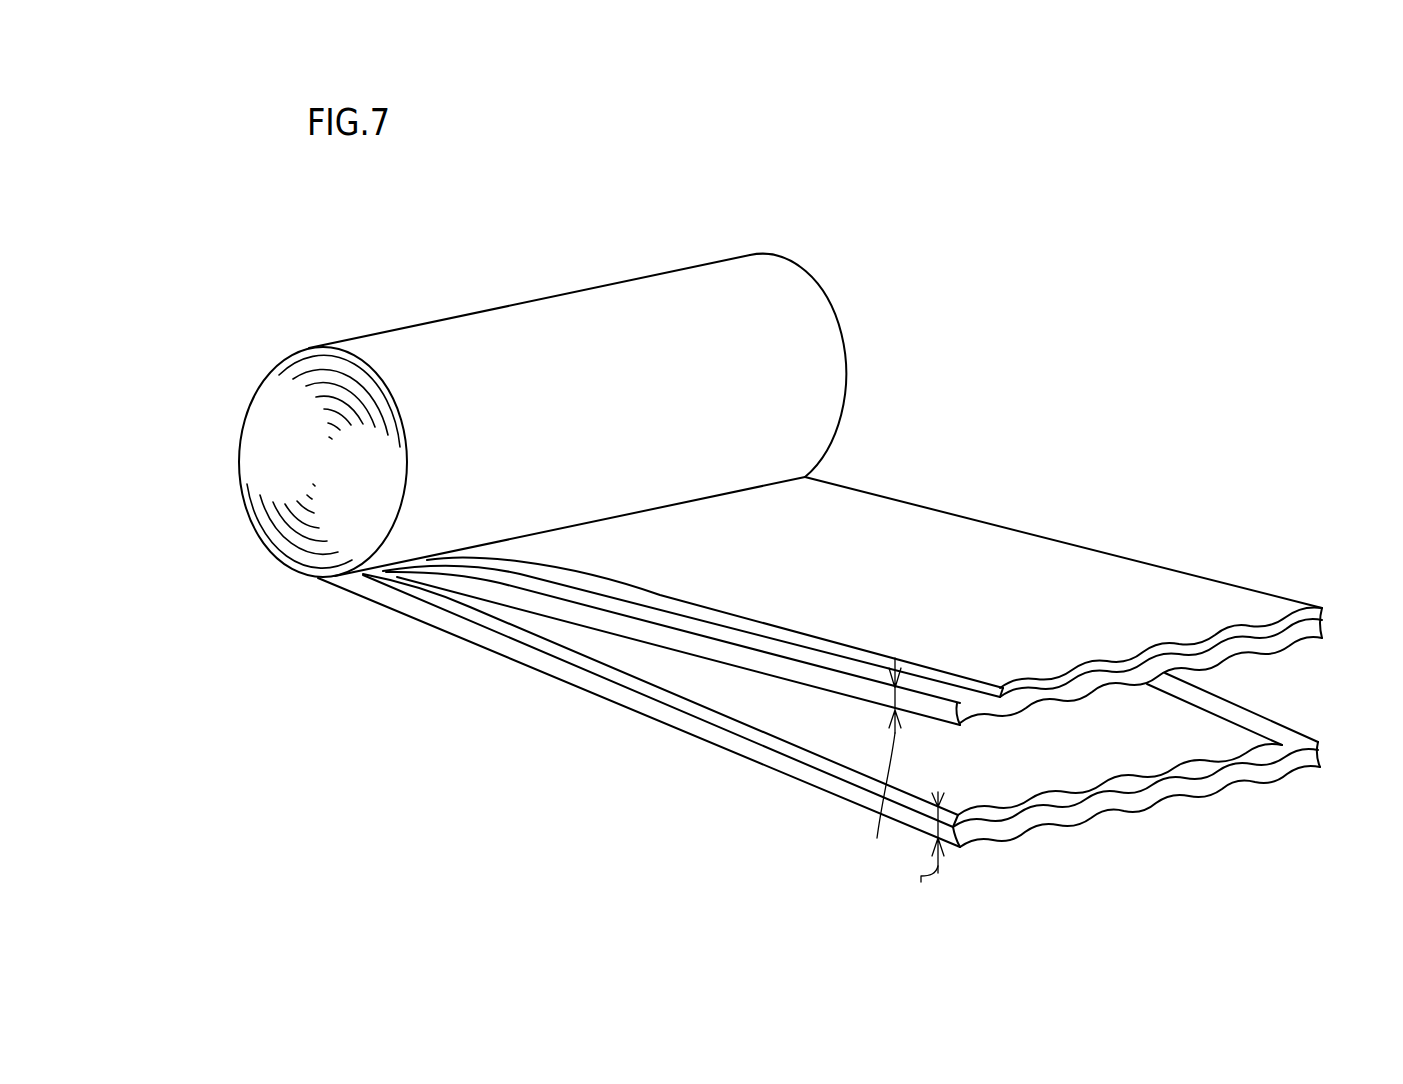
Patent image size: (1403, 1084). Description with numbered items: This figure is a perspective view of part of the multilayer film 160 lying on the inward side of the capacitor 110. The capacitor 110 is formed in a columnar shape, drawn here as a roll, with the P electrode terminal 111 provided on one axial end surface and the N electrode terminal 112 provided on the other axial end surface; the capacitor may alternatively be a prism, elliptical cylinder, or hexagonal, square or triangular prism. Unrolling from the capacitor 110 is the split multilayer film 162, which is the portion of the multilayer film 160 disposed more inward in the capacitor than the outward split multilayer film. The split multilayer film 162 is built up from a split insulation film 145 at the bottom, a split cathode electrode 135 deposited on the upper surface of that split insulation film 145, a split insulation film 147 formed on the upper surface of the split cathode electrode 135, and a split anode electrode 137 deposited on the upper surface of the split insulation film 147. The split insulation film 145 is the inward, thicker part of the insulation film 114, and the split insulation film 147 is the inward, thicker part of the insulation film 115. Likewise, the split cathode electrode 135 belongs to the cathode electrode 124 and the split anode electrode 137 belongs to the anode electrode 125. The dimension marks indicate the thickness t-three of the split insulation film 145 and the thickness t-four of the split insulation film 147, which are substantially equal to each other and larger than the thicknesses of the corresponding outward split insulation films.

The capacitor 110 is at (480, 222).
The P electrode terminal 111 is at (270, 506).
The N electrode terminal 112 is at (847, 385).
The split anode electrode 137 is at (874, 572).
The anode electrode 125 is at (1030, 558).
The split insulation film 147 is at (852, 684).
The insulation film 115 is at (713, 630).
The split multilayer film 162 is at (852, 625).
The multilayer film 160 is at (852, 625).
The split cathode electrode 135 is at (840, 706).
The cathode electrode 124 is at (773, 718).
The split insulation film 145 is at (819, 727).
The insulation film 114 is at (832, 783).